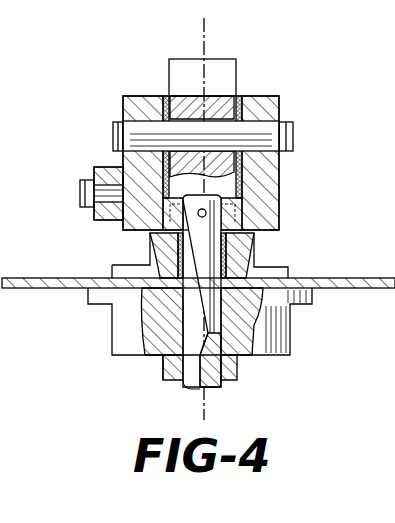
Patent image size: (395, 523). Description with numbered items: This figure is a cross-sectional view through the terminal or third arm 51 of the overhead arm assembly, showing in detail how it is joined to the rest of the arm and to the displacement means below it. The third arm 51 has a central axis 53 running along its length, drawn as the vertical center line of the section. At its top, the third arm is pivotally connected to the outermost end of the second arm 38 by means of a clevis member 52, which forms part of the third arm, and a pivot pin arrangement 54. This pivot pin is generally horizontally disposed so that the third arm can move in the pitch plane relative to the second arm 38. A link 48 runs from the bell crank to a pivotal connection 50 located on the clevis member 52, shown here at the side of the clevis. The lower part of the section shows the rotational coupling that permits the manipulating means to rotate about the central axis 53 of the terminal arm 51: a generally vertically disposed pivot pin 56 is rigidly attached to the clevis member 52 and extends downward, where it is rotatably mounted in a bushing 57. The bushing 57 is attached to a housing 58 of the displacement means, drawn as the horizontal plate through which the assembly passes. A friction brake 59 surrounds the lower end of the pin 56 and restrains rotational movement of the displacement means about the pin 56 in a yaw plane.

The second arm 38 is at (228, 70).
The link 48 is at (94, 218).
The pivotal connection 50 is at (80, 194).
The third arm 51 is at (286, 208).
The clevis member 52 is at (270, 182).
The central axis 53 is at (204, 33).
The pivot pin arrangement 54 is at (293, 143).
The pivot pin 56 is at (192, 375).
The bushing 57 is at (240, 276).
The housing 58 is at (55, 278).
The friction brake 59 is at (120, 319).